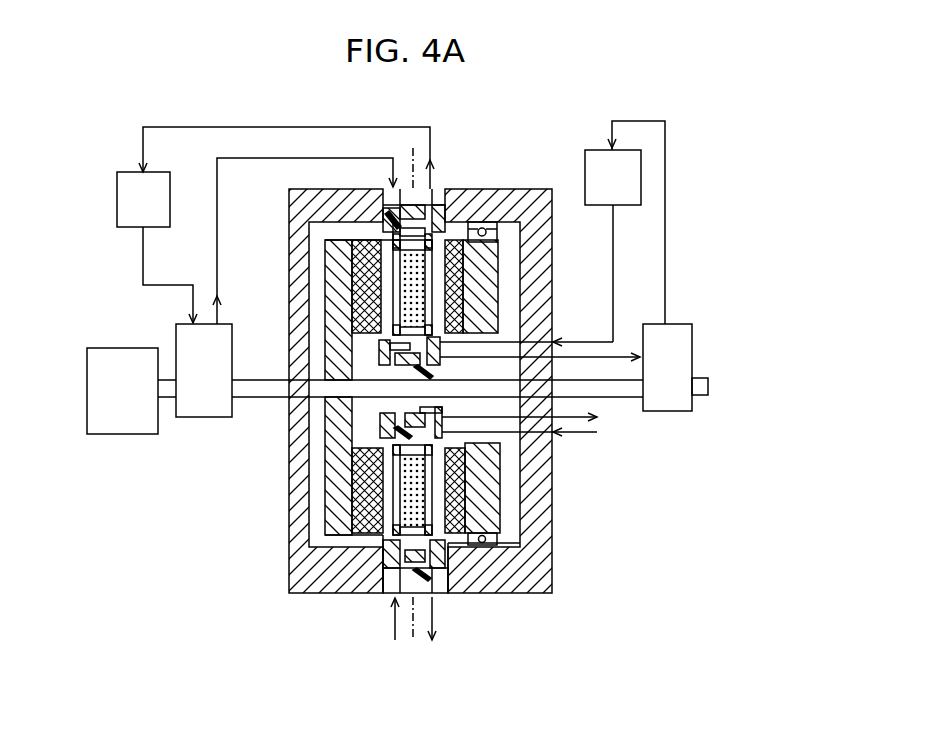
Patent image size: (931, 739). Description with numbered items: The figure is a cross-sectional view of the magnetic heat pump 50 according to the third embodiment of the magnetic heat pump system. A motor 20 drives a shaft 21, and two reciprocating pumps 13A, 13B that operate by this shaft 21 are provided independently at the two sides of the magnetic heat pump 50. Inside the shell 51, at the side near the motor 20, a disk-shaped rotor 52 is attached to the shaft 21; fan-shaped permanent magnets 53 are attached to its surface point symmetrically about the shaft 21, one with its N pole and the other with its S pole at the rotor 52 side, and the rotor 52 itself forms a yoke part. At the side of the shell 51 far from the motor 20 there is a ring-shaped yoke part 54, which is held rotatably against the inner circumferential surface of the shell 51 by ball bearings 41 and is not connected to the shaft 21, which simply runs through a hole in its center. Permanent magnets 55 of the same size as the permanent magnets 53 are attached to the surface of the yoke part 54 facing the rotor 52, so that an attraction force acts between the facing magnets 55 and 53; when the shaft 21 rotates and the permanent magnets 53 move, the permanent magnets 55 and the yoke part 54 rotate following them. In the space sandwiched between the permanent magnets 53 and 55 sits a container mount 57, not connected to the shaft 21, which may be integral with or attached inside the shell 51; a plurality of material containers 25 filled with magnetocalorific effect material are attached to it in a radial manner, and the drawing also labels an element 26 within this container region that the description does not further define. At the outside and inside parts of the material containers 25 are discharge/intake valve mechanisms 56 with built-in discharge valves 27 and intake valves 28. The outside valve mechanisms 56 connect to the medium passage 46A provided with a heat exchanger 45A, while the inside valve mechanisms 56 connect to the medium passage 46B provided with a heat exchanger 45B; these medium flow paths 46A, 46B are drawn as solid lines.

The magnetic heat pump 50 is at (467, 168).
The shell 51 is at (553, 478).
The ball bearings 41 is at (495, 224).
The rotor 52 is at (338, 515).
The permanent magnets 53 is at (373, 553).
The yoke part 54 is at (492, 509).
The permanent magnets 55 is at (460, 530).
The material containers 25 is at (427, 283).
The permanent magnet 26 is at (423, 303).
The discharge valves 27 is at (456, 593).
The intake valves 28 is at (452, 593).
The discharge/intake valve mechanisms 56 is at (500, 647).
The container mount 57 is at (380, 595).
The shaft 21 is at (260, 390).
The motor 20 is at (120, 436).
The reciprocating pump 13A is at (205, 410).
The reciprocating pump 13B is at (695, 340).
The heat exchanger 45A is at (117, 188).
The medium passage 46A is at (143, 255).
The heat exchanger 45B is at (642, 178).
The medium passage 46B is at (667, 238).